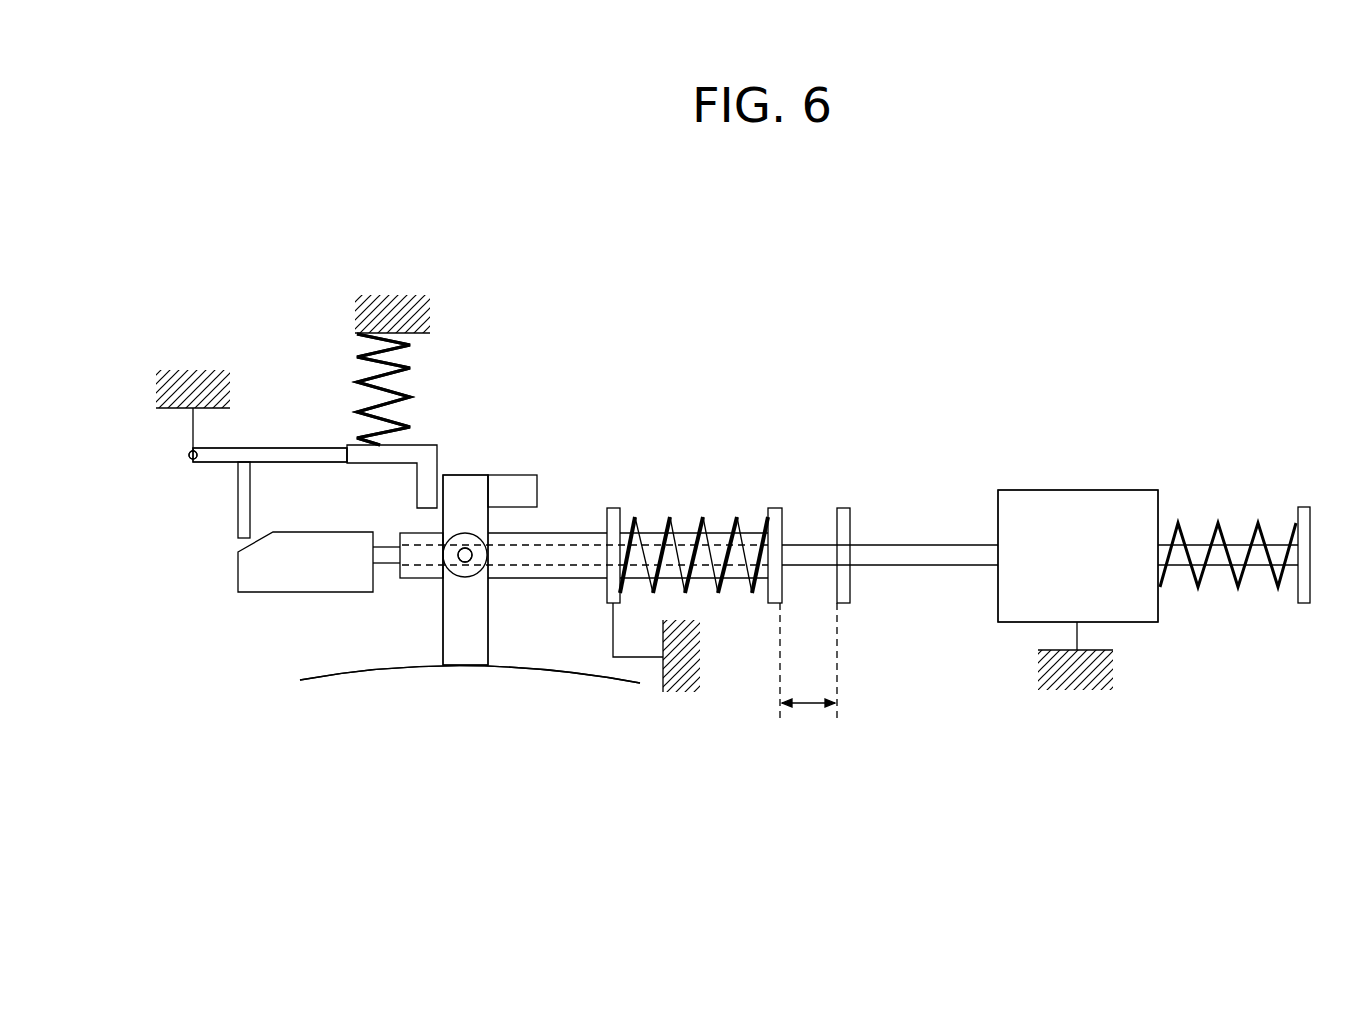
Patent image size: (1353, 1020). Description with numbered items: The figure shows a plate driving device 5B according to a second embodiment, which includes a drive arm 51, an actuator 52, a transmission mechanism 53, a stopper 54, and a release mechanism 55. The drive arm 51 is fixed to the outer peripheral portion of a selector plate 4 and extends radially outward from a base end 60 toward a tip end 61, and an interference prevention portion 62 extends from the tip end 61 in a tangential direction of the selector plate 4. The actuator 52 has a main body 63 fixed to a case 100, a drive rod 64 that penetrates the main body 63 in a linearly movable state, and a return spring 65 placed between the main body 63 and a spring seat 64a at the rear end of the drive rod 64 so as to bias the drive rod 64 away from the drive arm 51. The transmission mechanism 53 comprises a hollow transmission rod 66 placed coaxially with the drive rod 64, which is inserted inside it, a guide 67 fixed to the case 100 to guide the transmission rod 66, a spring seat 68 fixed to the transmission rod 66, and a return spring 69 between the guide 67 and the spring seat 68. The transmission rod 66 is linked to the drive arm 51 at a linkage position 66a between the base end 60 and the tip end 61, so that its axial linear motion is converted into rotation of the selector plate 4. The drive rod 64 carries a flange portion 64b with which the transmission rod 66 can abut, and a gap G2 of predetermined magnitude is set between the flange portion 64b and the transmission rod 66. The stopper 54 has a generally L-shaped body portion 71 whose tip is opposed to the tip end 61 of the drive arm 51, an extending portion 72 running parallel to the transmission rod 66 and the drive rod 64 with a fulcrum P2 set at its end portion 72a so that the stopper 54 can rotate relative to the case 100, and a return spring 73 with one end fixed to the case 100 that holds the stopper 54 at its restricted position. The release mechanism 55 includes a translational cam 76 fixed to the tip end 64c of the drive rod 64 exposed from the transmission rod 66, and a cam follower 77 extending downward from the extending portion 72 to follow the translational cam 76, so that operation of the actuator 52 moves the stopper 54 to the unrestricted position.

The selector plate 4 is at (512, 663).
The drive arm 51 is at (463, 612).
The actuator 52 is at (1112, 458).
The transmission mechanism 53 is at (573, 592).
The stopper 54 is at (415, 382).
The release mechanism 55 is at (178, 595).
The base end 60 is at (468, 668).
The tip end 61 is at (470, 483).
The interference prevention portion 62 is at (520, 480).
The main body 63 is at (1050, 500).
The drive rod 64 is at (928, 548).
The spring seat 64a is at (1302, 507).
The flange portion 64b is at (843, 508).
The tip end 64c is at (383, 533).
The return spring 65 is at (1215, 522).
The transmission rod 66 is at (562, 533).
The linkage position 66a is at (462, 557).
The guide 67 is at (613, 508).
The spring seat 68 is at (775, 508).
The return spring 69 is at (672, 520).
The body portion 71 is at (418, 446).
The extending portion 72 is at (285, 448).
The end portion 72a is at (192, 462).
The return spring 73 is at (360, 381).
The translational cam 76 is at (271, 580).
The cam follower 77 is at (250, 492).
The case 100 is at (413, 337).
The fulcrum P2 is at (188, 455).
The gap G2 is at (808, 663).
The plate driving device 5B is at (734, 333).